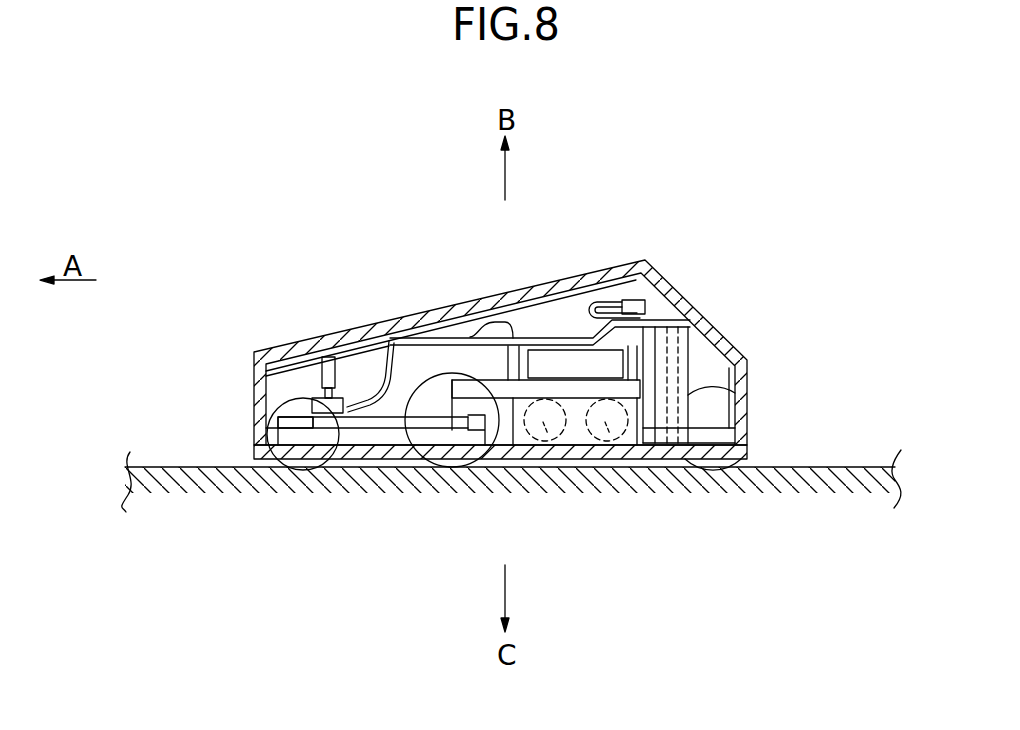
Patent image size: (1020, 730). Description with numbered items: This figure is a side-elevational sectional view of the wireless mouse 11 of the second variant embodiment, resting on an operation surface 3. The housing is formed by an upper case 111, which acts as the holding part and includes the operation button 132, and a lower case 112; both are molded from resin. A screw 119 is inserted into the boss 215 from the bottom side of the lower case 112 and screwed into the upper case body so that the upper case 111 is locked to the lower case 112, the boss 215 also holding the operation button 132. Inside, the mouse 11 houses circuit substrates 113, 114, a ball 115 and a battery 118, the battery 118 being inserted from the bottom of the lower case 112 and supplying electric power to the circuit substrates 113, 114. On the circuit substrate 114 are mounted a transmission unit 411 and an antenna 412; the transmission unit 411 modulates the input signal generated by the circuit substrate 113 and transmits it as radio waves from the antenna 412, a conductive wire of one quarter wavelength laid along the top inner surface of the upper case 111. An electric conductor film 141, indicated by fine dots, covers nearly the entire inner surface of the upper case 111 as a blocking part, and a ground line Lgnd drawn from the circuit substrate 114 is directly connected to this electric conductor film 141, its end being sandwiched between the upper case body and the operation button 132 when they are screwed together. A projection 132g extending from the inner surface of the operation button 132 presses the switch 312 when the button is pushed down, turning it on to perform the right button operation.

The wireless mouse 11 is at (242, 169).
The operation surface 3 is at (864, 492).
The upper case 111 is at (690, 294).
The lower case 112 is at (763, 440).
The screw 119 is at (720, 349).
The antenna 412 is at (493, 305).
The operation button 132 is at (368, 333).
The projection 132g is at (314, 338).
The electric conductor film 141 is at (443, 305).
The transmission unit 411 is at (580, 366).
The ground line Lgnd is at (592, 300).
The boss 215 is at (748, 400).
The circuit substrate 114 is at (629, 388).
The battery 118 is at (545, 452).
The ball 115 is at (428, 437).
The circuit substrate 113 is at (335, 422).
The switch 312 is at (262, 402).